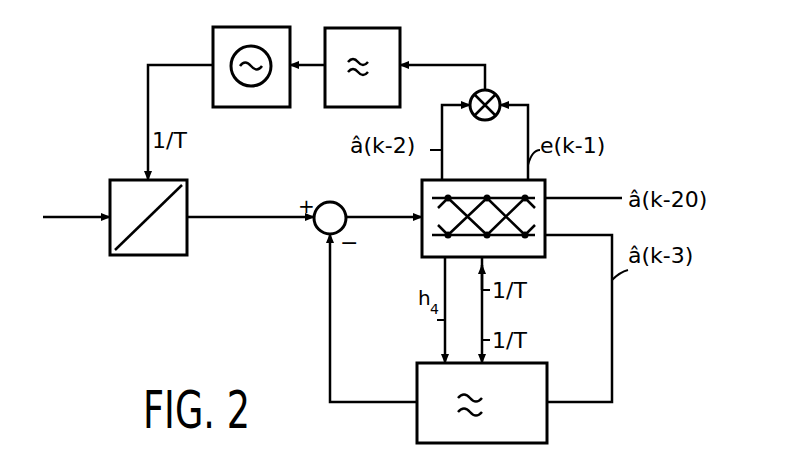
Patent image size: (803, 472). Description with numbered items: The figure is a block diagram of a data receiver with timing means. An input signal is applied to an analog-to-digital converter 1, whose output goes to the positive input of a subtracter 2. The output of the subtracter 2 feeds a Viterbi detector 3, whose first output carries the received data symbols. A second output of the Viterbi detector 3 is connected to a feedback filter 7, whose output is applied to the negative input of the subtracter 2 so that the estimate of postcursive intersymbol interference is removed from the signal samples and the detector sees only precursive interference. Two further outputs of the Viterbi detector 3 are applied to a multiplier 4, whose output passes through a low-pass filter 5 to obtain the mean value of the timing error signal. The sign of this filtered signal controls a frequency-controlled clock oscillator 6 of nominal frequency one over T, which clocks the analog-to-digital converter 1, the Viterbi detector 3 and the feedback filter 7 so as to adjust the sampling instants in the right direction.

The analog-to-digital converter 1 is at (165, 255).
The subtracter 2 is at (341, 207).
The Viterbi detector 3 is at (545, 190).
The multiplier 4 is at (497, 95).
The low-pass filter 5 is at (400, 48).
The frequency-controlled clock oscillator 6 is at (213, 45).
The feedback filter 7 is at (547, 385).